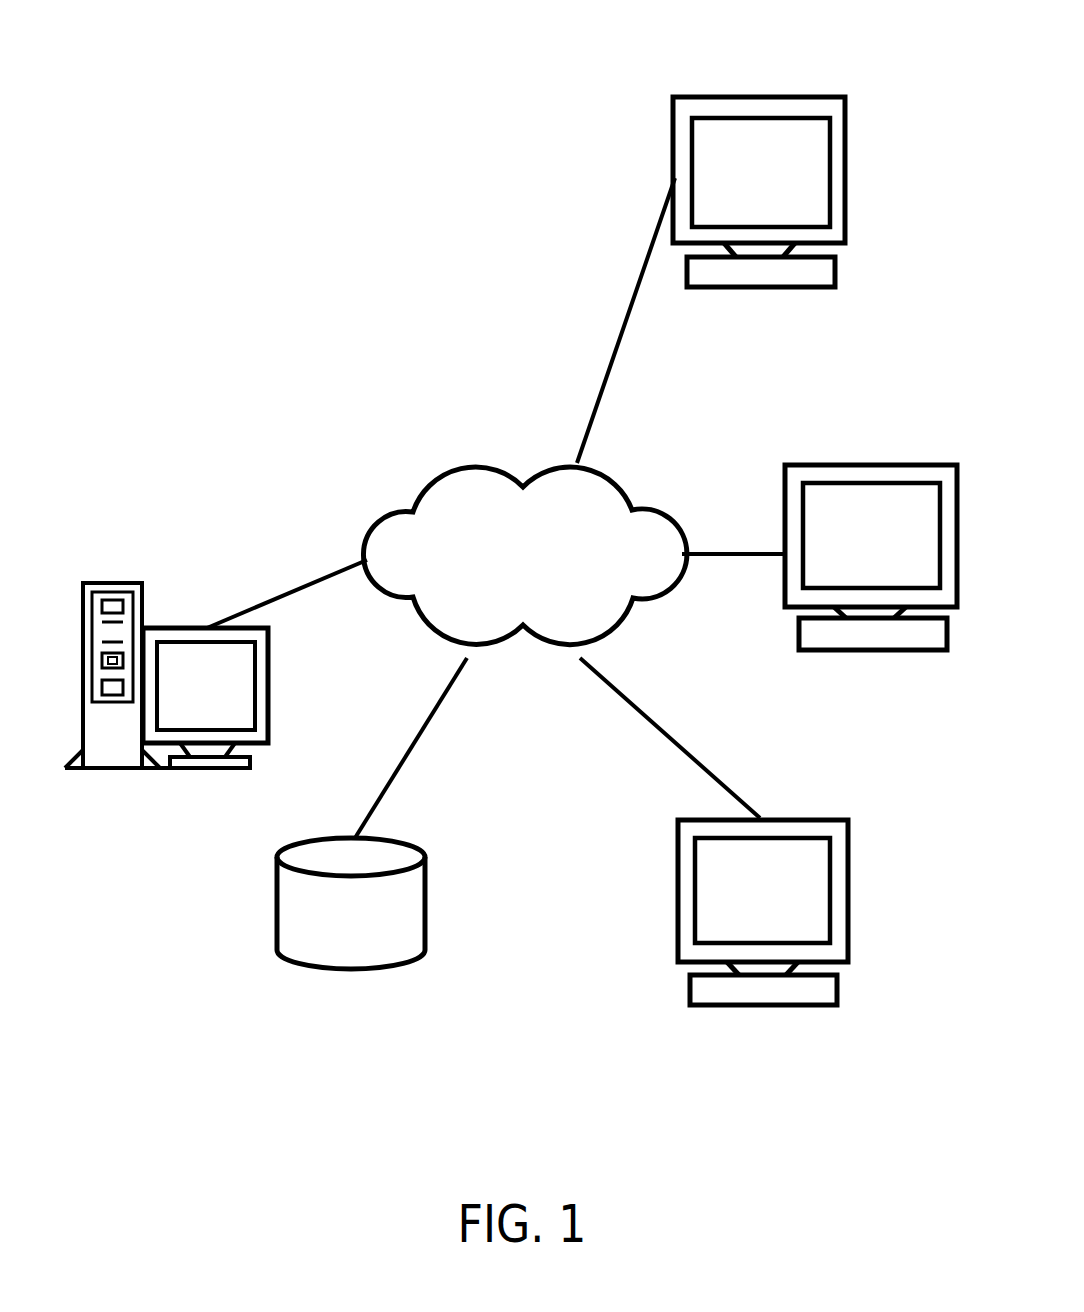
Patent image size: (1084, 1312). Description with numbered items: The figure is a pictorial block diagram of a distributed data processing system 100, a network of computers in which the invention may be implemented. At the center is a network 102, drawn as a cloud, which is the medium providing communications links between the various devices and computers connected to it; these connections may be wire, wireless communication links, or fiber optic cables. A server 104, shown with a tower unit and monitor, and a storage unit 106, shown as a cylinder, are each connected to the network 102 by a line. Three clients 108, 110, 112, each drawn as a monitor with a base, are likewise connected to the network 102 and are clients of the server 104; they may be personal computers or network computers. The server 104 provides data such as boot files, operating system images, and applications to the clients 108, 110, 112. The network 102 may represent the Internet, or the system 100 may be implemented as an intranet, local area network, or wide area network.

The data processing system 100 is at (572, 913).
The network 102 is at (467, 485).
The server 104 is at (177, 628).
The storage unit 106 is at (323, 953).
The client 108 is at (733, 110).
The client 110 is at (843, 473).
The client 112 is at (818, 993).